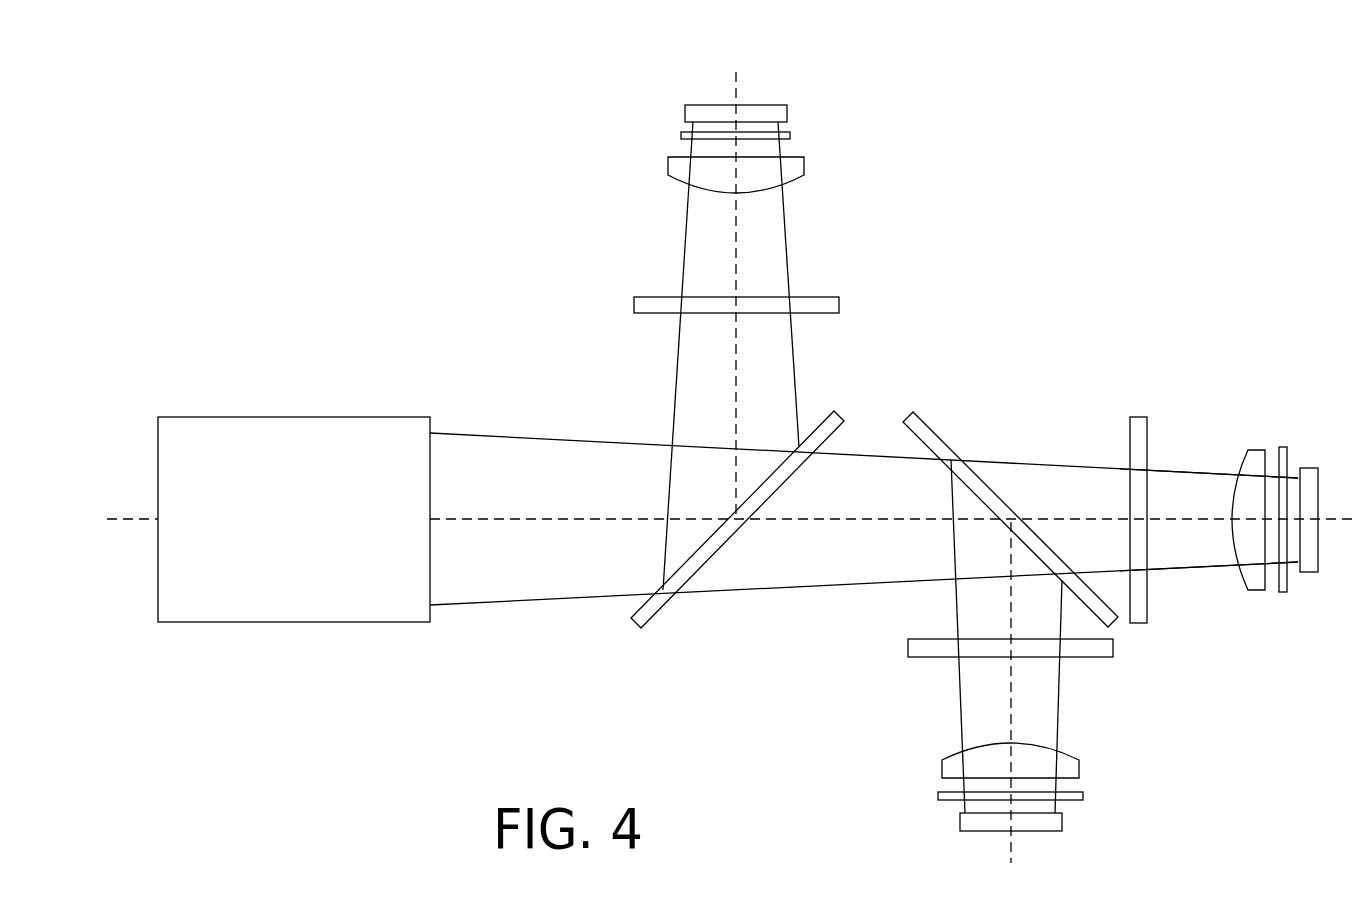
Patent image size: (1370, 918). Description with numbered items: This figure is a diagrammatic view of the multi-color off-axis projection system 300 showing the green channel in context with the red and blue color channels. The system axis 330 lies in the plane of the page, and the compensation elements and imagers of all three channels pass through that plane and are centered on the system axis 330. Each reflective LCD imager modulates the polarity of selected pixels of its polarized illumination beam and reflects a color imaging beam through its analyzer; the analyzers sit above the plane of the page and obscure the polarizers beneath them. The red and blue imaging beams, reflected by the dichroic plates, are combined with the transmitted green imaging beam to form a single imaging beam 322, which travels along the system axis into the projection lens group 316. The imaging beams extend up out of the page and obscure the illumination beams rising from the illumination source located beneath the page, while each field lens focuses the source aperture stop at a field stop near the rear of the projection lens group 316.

The off-axis projection system 300 is at (255, 93).
The projection lens group 316 is at (227, 417).
The imaging beam 322 is at (512, 437).
The system axis 330 is at (133, 519).